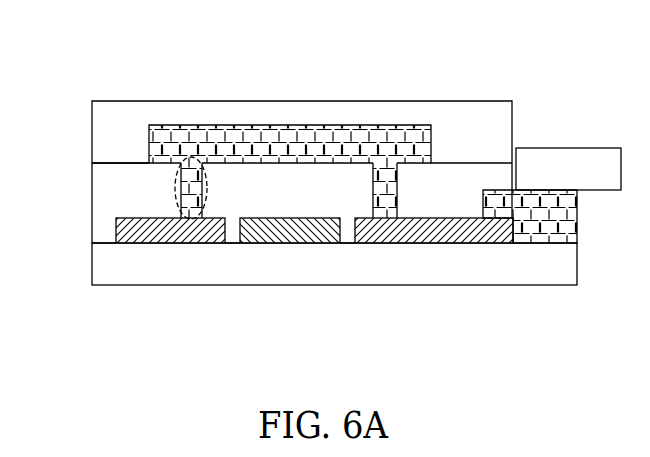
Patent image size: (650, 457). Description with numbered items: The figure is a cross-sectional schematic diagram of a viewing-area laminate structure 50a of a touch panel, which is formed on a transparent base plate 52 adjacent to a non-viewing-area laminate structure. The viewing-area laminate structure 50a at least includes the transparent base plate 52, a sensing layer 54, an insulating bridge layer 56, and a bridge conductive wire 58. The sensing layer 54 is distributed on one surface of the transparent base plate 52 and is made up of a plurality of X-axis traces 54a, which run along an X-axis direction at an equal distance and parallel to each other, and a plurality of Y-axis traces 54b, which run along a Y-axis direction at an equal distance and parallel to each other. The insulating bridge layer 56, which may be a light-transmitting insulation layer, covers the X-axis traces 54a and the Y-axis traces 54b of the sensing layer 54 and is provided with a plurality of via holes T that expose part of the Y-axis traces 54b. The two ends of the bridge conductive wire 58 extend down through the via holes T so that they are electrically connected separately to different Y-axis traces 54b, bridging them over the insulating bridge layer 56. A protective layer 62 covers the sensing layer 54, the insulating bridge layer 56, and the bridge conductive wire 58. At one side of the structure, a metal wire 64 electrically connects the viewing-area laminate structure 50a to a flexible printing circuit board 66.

The viewing-area laminate structure 50a is at (73, 52).
The transparent base plate 52 is at (322, 273).
The sensing layer 54 is at (300, 276).
The X-axis traces 54a is at (257, 243).
The Y-axis traces 54b is at (143, 243).
The insulating bridge layer 56 is at (144, 202).
The bridge conductive wire 58 is at (272, 138).
The protective layer 62 is at (486, 137).
The metal wire 64 is at (547, 222).
The flexible printing circuit board 66 is at (582, 181).
The via holes T is at (208, 243).